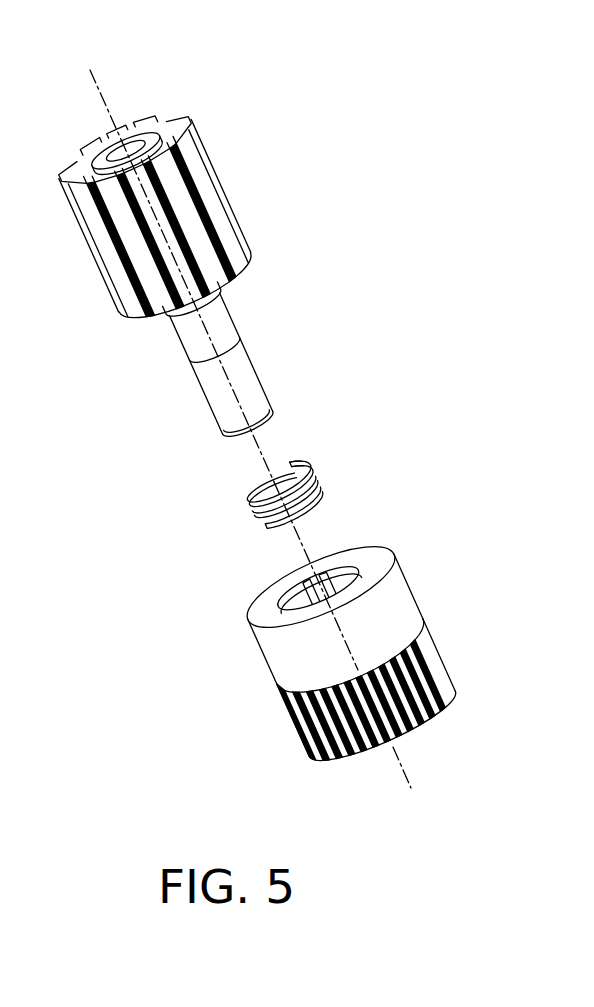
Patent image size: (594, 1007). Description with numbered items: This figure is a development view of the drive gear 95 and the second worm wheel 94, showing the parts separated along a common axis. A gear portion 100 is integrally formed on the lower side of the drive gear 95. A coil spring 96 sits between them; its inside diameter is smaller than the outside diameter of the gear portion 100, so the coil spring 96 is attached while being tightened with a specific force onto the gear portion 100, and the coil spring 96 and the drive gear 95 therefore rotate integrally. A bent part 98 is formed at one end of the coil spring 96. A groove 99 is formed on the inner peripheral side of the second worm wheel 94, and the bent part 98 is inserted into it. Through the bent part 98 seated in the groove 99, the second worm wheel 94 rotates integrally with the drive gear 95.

The second worm wheel 94 is at (373, 623).
The drive gear 95 is at (192, 250).
The coil spring 96 is at (312, 475).
The bent part 98 is at (305, 450).
The groove 99 is at (305, 607).
The gear portion 100 is at (247, 385).